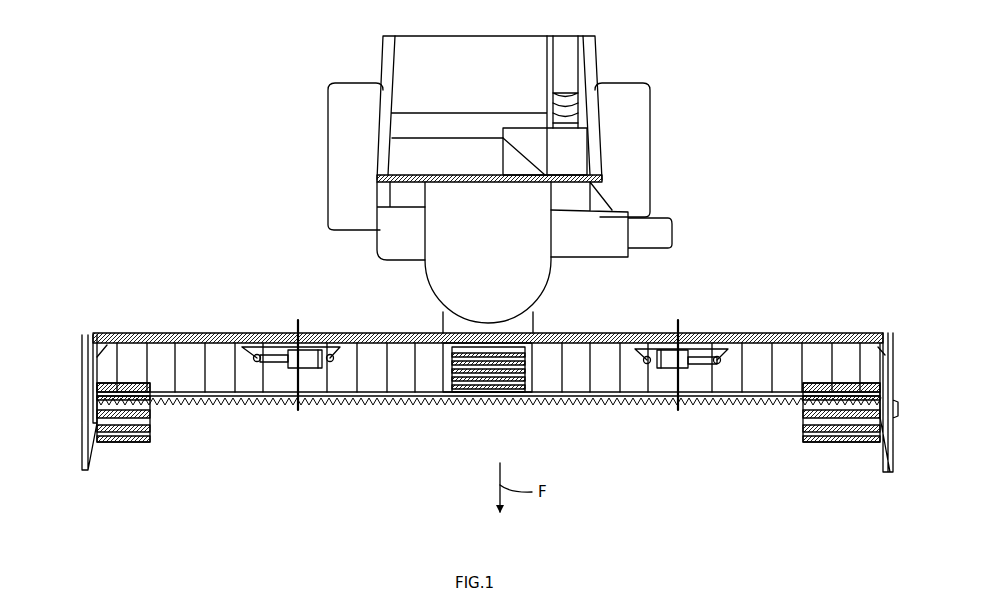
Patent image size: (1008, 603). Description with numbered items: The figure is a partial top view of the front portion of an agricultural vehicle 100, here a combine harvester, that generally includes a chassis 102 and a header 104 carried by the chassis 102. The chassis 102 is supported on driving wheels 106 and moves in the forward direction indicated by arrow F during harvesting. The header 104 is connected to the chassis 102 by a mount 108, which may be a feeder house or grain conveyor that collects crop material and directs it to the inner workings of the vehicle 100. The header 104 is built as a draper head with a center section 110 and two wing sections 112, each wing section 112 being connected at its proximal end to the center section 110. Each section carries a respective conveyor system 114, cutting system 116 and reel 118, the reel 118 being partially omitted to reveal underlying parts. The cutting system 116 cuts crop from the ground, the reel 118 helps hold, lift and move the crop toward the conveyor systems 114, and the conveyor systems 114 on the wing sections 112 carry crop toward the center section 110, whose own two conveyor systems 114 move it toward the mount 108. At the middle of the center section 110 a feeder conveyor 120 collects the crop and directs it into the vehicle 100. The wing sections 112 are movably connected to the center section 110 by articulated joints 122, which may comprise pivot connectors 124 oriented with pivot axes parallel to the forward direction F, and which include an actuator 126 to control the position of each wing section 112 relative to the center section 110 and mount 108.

The agricultural vehicle 100 is at (520, 171).
The chassis 102 is at (410, 77).
The header 104 is at (463, 381).
The driving wheels 106 is at (648, 194).
The mount 108 is at (533, 322).
The center section 110 is at (390, 333).
The wing sections 112 is at (178, 333).
The conveyor system 114 is at (247, 370).
The cutting system 116 is at (167, 410).
The reel 118 is at (122, 442).
The feeder conveyor 120 is at (488, 382).
The articulated joints 122 is at (300, 318).
The pivot connectors 124 is at (300, 380).
The actuator 126 is at (283, 355).